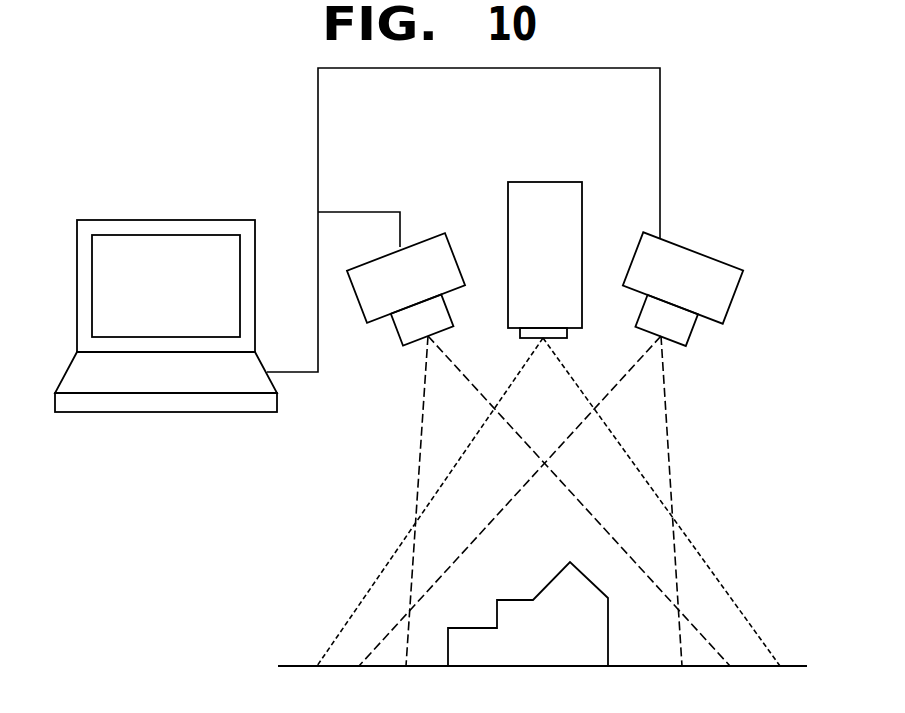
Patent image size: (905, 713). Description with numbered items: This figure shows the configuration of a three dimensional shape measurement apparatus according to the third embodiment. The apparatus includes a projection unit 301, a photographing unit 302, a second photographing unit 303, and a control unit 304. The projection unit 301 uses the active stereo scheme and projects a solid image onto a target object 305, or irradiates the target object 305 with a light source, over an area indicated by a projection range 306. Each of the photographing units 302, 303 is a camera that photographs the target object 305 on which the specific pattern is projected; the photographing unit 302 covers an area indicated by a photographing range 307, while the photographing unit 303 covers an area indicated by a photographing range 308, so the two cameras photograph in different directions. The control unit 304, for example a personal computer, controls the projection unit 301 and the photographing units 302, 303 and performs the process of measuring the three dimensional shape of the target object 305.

The projection unit 301 is at (565, 182).
The photographing unit 302 is at (433, 236).
The second photographing unit 303 is at (722, 262).
The control unit 304 is at (220, 220).
The target object 305 is at (447, 648).
The projection range 306 is at (548, 388).
The photographing range 307 is at (433, 412).
The photographing range 308 is at (653, 383).